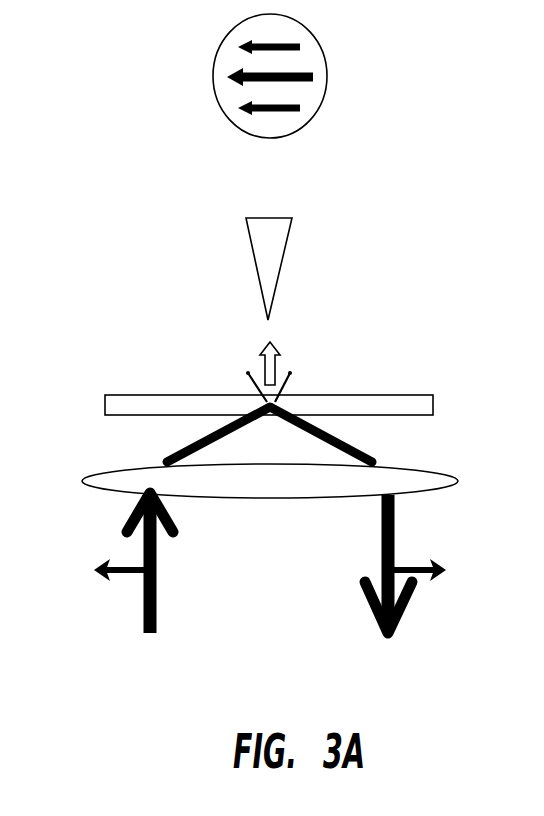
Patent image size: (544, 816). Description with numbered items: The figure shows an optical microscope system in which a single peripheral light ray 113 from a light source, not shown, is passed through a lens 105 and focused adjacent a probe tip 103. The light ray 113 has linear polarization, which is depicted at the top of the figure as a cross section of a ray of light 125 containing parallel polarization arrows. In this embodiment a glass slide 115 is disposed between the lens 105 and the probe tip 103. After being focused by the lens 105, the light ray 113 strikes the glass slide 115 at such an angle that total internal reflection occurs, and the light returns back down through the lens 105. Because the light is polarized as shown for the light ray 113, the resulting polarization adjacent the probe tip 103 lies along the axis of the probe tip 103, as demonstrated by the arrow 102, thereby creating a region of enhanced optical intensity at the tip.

The cross section of a ray of light 125 is at (327, 67).
The probe tip 103 is at (278, 252).
The arrow 102 is at (268, 339).
The glass slide 115 is at (400, 395).
The lens 105 is at (435, 477).
The light ray 113 is at (157, 600).